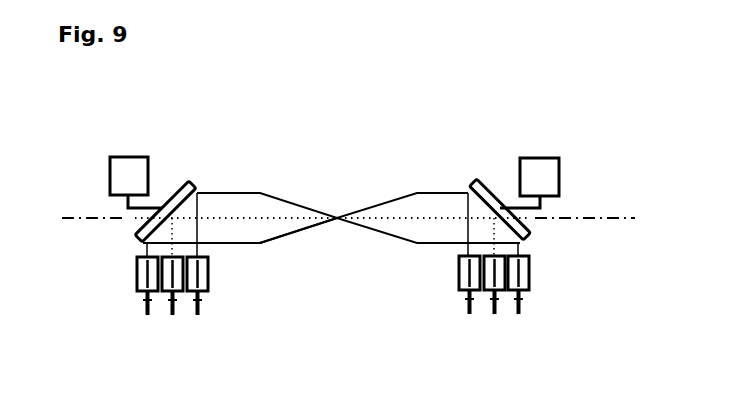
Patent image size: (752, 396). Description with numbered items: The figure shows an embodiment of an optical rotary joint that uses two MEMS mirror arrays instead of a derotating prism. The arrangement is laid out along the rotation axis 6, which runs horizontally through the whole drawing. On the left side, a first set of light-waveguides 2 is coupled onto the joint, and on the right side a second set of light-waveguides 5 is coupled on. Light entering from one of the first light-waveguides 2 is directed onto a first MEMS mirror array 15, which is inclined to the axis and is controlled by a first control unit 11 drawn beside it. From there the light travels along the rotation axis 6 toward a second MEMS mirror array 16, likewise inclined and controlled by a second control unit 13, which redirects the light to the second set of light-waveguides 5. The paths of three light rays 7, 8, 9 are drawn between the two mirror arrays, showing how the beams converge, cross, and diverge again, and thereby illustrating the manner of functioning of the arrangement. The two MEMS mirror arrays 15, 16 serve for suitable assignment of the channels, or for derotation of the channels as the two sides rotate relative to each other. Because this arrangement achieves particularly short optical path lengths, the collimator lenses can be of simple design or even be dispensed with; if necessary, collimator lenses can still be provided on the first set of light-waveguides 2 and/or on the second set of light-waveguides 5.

The first set of light-waveguides 2 is at (213, 303).
The second set of light-waveguides 5 is at (452, 303).
The rotation axis 6 is at (114, 226).
The light ray 7 is at (265, 190).
The light ray 8 is at (277, 215).
The light ray 9 is at (285, 232).
The first control unit 11 is at (136, 182).
The second control unit 13 is at (529, 183).
The first MEMS mirror array 15 is at (180, 190).
The second MEMS mirror array 16 is at (485, 190).